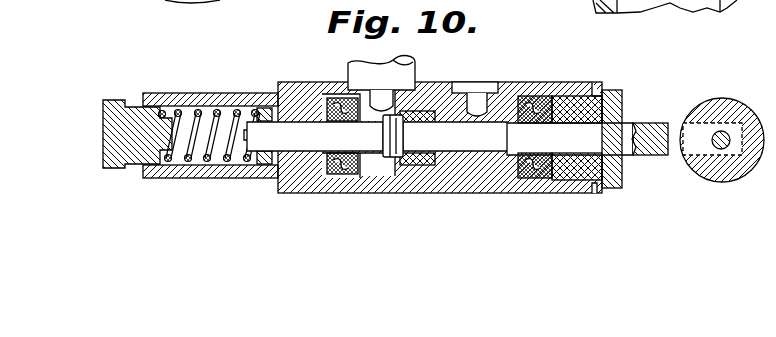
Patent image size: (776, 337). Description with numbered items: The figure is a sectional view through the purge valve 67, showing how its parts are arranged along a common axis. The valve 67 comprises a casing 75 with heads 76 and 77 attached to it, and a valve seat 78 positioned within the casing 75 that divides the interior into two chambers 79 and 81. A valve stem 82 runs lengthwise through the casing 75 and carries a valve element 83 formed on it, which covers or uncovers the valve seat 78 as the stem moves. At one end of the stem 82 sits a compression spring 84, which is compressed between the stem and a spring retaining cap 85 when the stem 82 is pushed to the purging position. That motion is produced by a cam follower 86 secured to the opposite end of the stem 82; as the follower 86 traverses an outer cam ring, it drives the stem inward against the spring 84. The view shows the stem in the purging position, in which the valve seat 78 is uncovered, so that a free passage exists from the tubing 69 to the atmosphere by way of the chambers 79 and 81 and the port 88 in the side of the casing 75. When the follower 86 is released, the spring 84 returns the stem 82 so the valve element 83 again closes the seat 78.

The valve 67 is at (541, 75).
The tubing 69 is at (355, 72).
The casing 75 is at (558, 83).
The head 76 is at (274, 88).
The head 77 is at (610, 90).
The valve seat 78 is at (418, 158).
The chamber 79 is at (370, 158).
The chamber 81 is at (483, 157).
The valve stem 82 is at (623, 135).
The valve element 83 is at (390, 160).
The compression spring 84 is at (208, 112).
The spring retaining cap 85 is at (118, 108).
The cam follower 86 is at (722, 100).
The port 88 is at (478, 82).